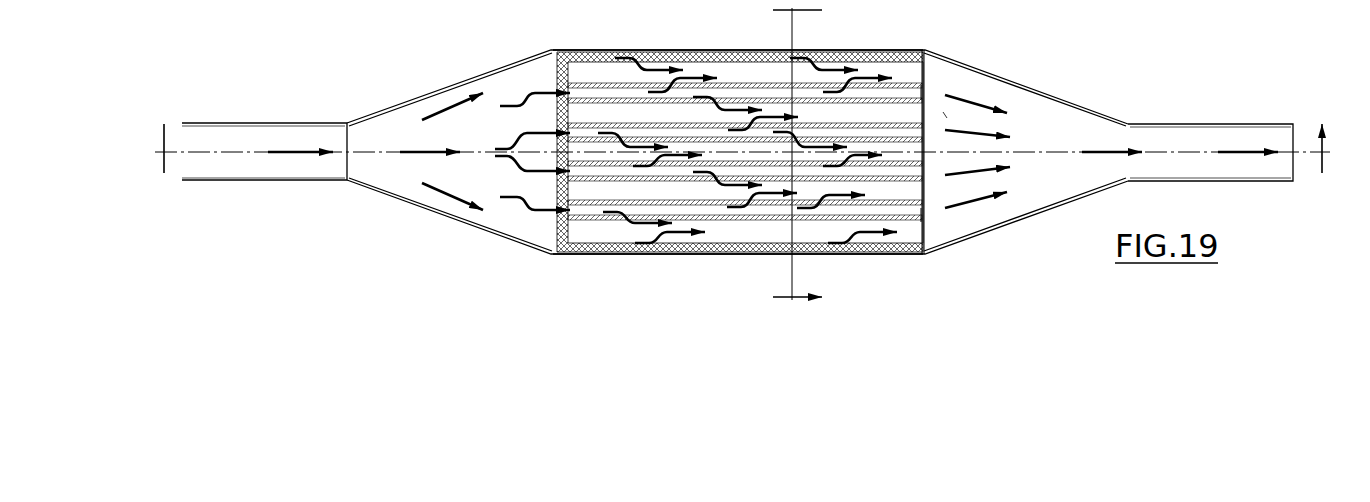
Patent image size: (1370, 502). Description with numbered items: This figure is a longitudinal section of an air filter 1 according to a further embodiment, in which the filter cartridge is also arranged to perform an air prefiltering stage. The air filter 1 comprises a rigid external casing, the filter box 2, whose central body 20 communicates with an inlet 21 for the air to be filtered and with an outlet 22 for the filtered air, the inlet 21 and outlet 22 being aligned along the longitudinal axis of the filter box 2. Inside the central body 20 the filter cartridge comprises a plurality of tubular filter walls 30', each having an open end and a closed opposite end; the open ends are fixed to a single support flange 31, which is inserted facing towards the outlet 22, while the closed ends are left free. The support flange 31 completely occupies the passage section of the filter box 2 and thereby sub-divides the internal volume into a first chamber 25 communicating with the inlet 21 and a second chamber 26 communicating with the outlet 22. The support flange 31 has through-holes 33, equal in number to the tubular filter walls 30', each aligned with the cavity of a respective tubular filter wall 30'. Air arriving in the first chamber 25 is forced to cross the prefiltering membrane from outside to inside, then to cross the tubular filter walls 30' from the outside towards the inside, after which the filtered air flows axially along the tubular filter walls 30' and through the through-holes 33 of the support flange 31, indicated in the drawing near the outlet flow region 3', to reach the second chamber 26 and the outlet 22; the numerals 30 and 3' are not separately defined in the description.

The air filter 1 is at (245, 107).
The filter box 2 is at (378, 300).
The outlet flow passage 3' is at (980, 59).
The central body 20 is at (592, 253).
The inlet 21 is at (250, 182).
The outlet 22 is at (1233, 120).
The first chamber 25 is at (483, 140).
The second chamber 26 is at (1063, 140).
The filter body 30 is at (818, 161).
The tubular filter walls 30' is at (745, 161).
The support flange 31 is at (922, 227).
The through-holes 33 is at (932, 87).